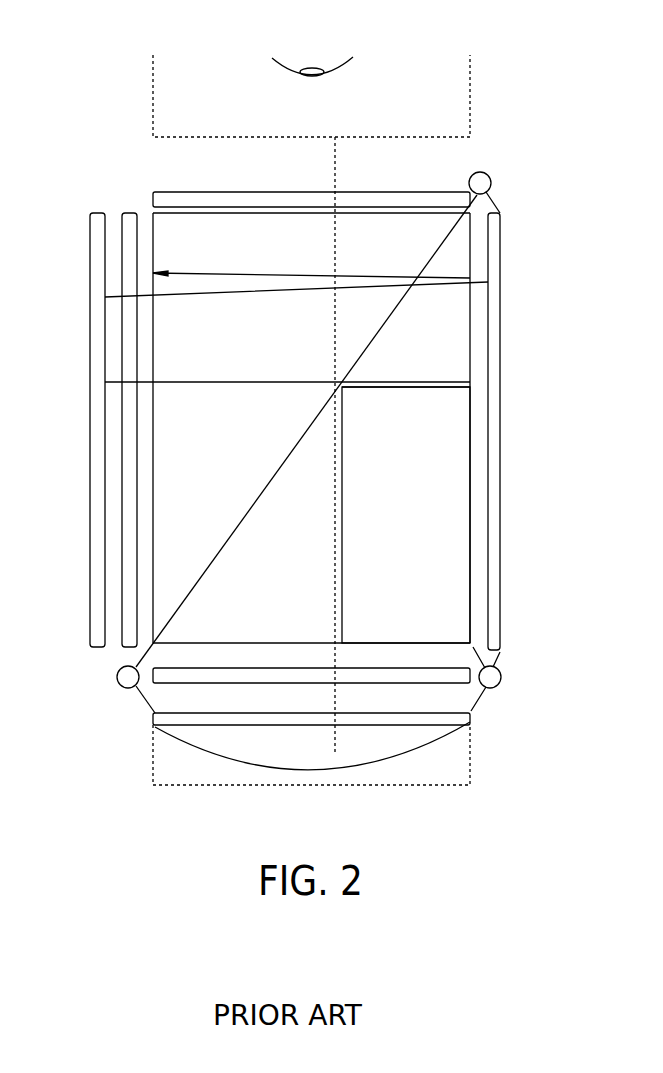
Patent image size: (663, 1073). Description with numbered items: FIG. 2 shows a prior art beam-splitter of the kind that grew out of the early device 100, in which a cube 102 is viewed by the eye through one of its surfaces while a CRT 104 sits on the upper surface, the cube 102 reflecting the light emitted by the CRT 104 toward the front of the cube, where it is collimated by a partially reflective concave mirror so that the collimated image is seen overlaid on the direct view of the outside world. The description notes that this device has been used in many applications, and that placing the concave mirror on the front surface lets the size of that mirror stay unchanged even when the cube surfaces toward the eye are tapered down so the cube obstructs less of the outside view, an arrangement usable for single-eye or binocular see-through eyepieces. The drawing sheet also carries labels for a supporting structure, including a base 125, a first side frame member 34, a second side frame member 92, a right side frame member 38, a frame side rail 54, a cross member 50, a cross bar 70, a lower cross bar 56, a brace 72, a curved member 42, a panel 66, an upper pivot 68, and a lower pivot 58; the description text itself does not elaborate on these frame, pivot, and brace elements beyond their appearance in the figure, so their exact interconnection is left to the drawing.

The first side frame member 34 is at (95, 250).
The second side frame member 92 is at (122, 230).
The CRT 104 is at (198, 193).
The early device 100 is at (382, 228).
The upper pivot 68 is at (462, 174).
The right side frame member 38 is at (502, 228).
The frame side rail 54 is at (270, 216).
The brace 72 is at (305, 291).
The cross member 50 is at (155, 365).
The cross bar 70 is at (388, 389).
The cube 102 is at (245, 514).
The panel 66 is at (467, 527).
The lower cross bar 56 is at (222, 643).
The lower pivot 58 is at (163, 688).
The curved member 42 is at (185, 745).
The base 125 is at (438, 765).